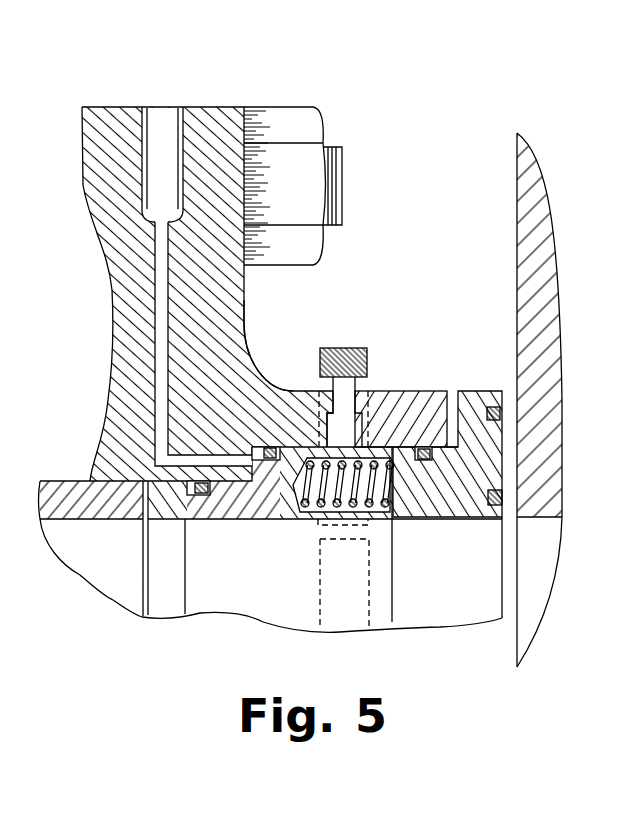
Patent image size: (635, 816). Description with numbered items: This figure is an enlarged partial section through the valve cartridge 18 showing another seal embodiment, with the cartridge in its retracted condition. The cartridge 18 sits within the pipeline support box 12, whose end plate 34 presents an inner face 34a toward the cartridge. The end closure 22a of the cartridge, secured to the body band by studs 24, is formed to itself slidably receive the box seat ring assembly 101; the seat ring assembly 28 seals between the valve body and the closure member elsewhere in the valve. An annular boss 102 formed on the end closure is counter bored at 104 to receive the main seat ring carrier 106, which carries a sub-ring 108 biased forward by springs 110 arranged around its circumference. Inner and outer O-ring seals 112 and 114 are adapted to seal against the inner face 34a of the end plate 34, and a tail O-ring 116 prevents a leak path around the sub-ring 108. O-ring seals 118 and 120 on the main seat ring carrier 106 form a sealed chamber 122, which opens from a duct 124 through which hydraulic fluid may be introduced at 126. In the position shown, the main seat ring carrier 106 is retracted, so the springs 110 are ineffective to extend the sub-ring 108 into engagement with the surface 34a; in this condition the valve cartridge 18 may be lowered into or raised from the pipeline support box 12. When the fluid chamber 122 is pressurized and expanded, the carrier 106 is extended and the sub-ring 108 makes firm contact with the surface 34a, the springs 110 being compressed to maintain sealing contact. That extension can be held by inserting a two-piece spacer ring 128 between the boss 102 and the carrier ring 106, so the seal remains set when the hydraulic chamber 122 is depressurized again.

The pipeline support box 12 is at (540, 141).
The valve cartridge 18 is at (290, 81).
The end closure 22a is at (232, 297).
The stud 24 is at (302, 161).
The seat ring assembly 28 is at (102, 509).
The end plate 34 is at (535, 191).
The inner face 34a is at (517, 191).
The box seat ring assembly 101 is at (421, 359).
The annular boss 102 is at (292, 395).
The counter bore 104 is at (287, 458).
The main seat ring carrier 106 is at (227, 505).
The sub-ring 108 is at (440, 505).
The springs 110 is at (386, 506).
The inner O-ring seal 112 is at (501, 498).
The outer O-ring seal 114 is at (497, 410).
The tail O-ring 116 is at (425, 450).
The O-ring seal 118 is at (270, 447).
The O-ring seal 120 is at (187, 495).
The sealed chamber 122 is at (240, 329).
The duct 124 is at (162, 340).
The hydraulic fluid inlet 126 is at (162, 118).
The two-piece spacer ring 128 is at (341, 350).